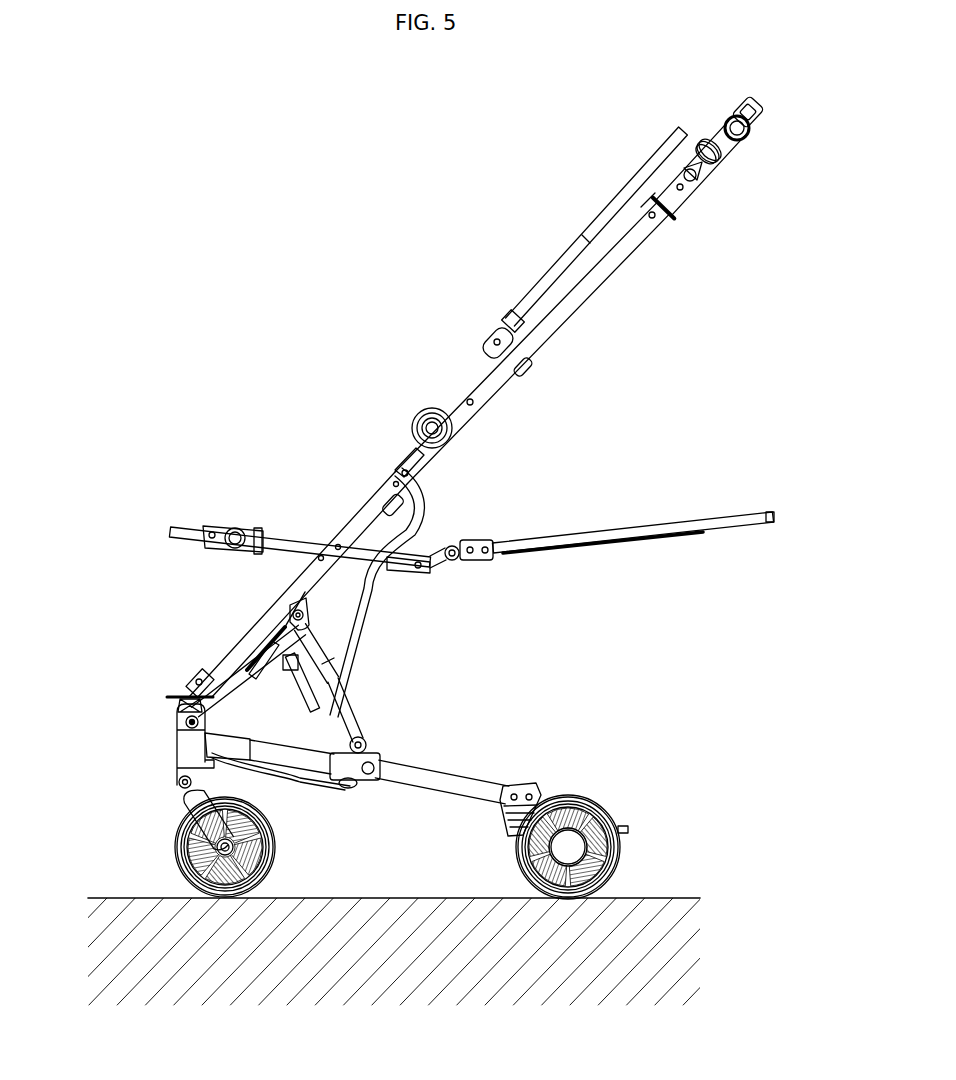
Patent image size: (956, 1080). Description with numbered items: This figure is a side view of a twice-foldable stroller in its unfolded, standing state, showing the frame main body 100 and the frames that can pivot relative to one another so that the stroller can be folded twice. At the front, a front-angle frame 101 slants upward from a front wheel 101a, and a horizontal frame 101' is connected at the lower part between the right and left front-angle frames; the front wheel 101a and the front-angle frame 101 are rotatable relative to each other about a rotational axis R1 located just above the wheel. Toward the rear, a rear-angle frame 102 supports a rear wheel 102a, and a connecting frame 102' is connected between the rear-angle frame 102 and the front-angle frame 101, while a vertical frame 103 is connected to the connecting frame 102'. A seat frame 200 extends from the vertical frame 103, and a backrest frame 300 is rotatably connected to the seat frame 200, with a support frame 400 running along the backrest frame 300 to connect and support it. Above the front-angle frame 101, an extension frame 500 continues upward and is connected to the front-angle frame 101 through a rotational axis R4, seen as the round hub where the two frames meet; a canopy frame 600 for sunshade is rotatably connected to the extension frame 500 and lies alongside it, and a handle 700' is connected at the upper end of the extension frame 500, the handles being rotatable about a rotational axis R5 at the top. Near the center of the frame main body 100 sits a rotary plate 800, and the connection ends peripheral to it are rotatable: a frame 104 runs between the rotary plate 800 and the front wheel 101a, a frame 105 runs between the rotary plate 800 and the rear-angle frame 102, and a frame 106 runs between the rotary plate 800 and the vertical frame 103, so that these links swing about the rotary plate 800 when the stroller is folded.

The frame main body 100 is at (338, 795).
The front-angle frame 101 is at (292, 628).
The horizontal frame 101' is at (155, 683).
The front wheel 101a is at (173, 843).
The rear-angle frame 102 is at (458, 802).
The connecting frame 102' is at (355, 658).
The rear wheel 102a is at (600, 806).
The vertical frame 103 is at (353, 620).
The frame 104 is at (232, 690).
The frame 105 is at (340, 707).
The frame 106 is at (335, 594).
The seat frame 200 is at (282, 542).
The backrest frame 300 is at (668, 522).
The support frame 400 is at (640, 538).
The extension frame 500 is at (622, 248).
The canopy frame 600 is at (587, 237).
The handle 700' is at (735, 168).
The rotary plate 800 is at (270, 657).
The rotational axis R1 is at (180, 700).
The rotational axis R4 is at (426, 410).
The rotational axis R5 is at (745, 112).